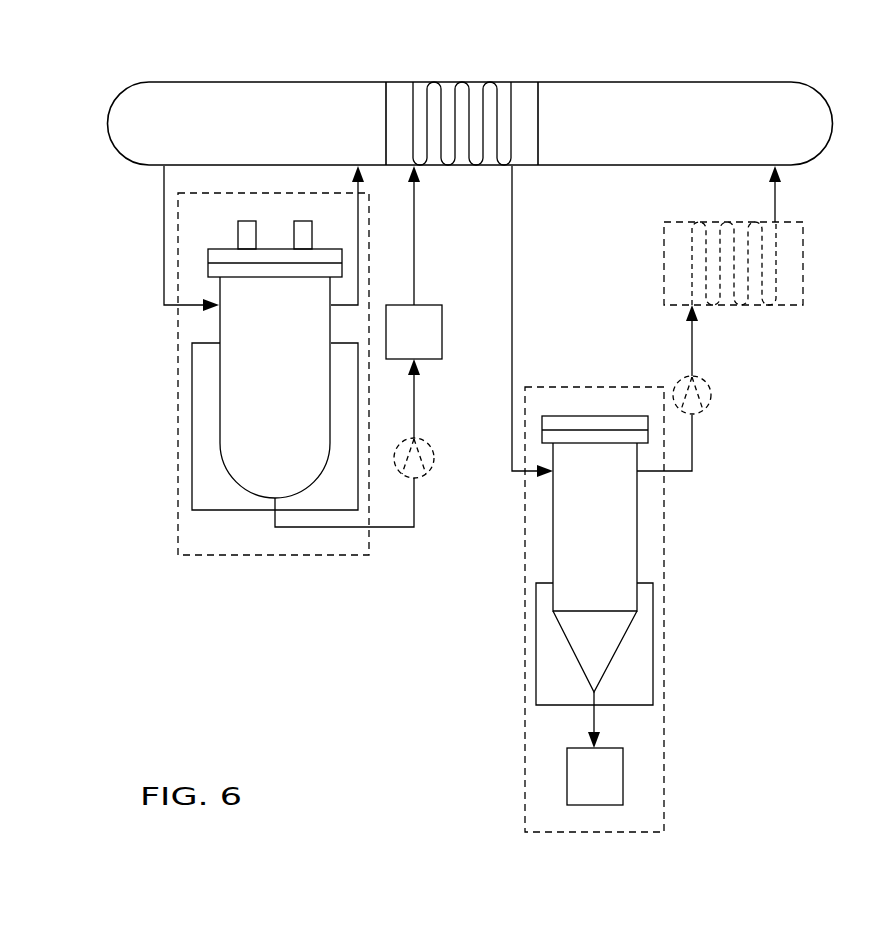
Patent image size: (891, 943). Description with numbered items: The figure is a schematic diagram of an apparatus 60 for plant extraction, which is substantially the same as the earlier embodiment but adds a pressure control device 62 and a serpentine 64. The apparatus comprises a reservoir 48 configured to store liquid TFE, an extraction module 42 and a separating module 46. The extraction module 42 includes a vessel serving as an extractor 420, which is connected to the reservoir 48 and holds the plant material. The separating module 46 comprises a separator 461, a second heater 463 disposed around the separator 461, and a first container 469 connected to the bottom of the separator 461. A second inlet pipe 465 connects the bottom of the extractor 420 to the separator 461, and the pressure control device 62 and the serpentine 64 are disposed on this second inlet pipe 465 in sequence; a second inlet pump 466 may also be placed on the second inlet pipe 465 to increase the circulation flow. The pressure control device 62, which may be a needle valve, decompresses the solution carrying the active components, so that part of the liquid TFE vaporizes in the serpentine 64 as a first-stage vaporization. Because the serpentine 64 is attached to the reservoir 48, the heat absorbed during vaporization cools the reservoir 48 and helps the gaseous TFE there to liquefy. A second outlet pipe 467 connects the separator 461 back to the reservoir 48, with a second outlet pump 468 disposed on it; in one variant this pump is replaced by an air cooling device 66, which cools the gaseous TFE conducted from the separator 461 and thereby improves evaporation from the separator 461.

The apparatus for plant extraction 60 is at (65, 65).
The reservoir 48 is at (768, 82).
The serpentine 64 is at (517, 82).
The air cooling device 66 is at (803, 255).
The pressure control device 62 is at (430, 305).
The extraction module 42 is at (287, 381).
The extractor 420 is at (220, 440).
The second inlet pipe 465 is at (310, 527).
The second inlet pump 466 is at (424, 476).
The separating module 46 is at (597, 499).
The separator 461 is at (637, 548).
The second heater 463 is at (536, 660).
The second outlet pipe 467 is at (700, 440).
The second outlet pump 468 is at (675, 385).
The first container 469 is at (623, 780).